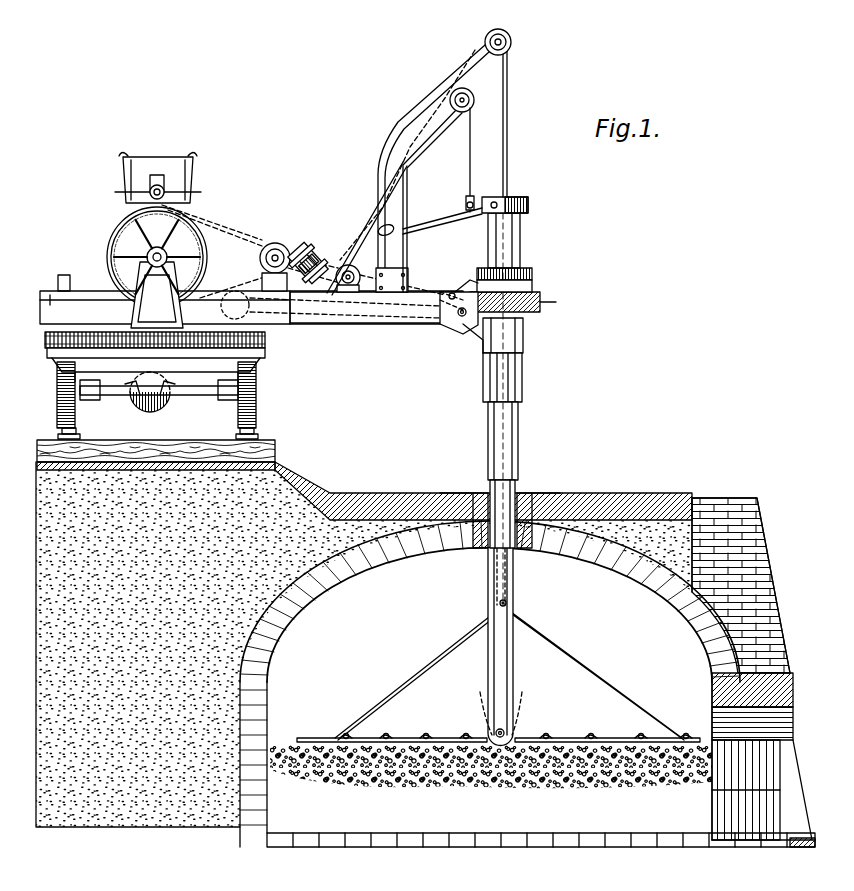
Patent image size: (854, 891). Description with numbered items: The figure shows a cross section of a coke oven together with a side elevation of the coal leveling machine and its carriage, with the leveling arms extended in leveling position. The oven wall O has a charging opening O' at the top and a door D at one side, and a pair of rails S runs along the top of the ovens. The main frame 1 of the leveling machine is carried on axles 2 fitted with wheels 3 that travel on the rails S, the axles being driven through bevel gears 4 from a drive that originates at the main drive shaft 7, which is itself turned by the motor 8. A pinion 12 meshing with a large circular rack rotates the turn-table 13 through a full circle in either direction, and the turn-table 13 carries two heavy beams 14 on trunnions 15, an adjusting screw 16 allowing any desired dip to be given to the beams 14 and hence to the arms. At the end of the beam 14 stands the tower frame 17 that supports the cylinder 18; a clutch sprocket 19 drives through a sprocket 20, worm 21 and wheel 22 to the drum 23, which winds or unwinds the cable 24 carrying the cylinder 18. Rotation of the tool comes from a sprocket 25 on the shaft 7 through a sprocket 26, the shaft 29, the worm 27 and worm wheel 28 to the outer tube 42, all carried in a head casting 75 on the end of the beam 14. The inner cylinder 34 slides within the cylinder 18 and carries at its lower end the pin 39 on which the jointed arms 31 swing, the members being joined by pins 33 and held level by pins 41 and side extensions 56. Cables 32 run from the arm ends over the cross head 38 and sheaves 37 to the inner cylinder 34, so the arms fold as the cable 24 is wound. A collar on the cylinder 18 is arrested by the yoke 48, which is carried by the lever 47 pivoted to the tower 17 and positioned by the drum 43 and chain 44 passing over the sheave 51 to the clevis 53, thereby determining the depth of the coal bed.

The main frame 1 is at (262, 356).
The axles 2 is at (118, 396).
The wheels 3 is at (57, 396).
The bevel gears 4 is at (130, 384).
The main drive shaft 7 is at (147, 257).
The motor 8 is at (157, 162).
The pinion 12 is at (266, 340).
The turn-table 13 is at (78, 322).
The beams 14 is at (388, 324).
The trunnions 15 is at (252, 306).
The adjusting screw 16 is at (60, 276).
The tower frame 17 is at (380, 138).
The cylinder 18 is at (521, 239).
The clutch sprocket 19 is at (126, 226).
The sprocket 20 is at (258, 247).
The worm 21 is at (276, 243).
The wheel 22 is at (294, 246).
The drum 23 is at (312, 256).
The cable 24 is at (362, 232).
The sprocket 25 is at (202, 258).
The sprocket 26 is at (452, 292).
The worm 27 is at (463, 316).
The worm wheel 28 is at (547, 302).
The shaft 29 is at (460, 318).
The arms 31 is at (305, 738).
The cables 32 is at (433, 660).
The pins 33 is at (340, 736).
The inner cylinder 34 is at (488, 586).
The sheaves 37 is at (512, 565).
The cross head 38 is at (510, 603).
The pin 39 is at (506, 731).
The pins 41 is at (480, 700).
The outer tube 42 is at (522, 379).
The drum 43 is at (352, 269).
The chain 44 is at (424, 160).
The lever 47 is at (428, 228).
The yoke 48 is at (528, 203).
The sheave 51 is at (474, 99).
The clevis 53 is at (466, 207).
The extension 56 is at (475, 495).
The head or frame casting 75 is at (470, 345).
The rails S is at (62, 432).
The oven wall O is at (490, 684).
The charging opening O' is at (500, 477).
The door D is at (793, 727).